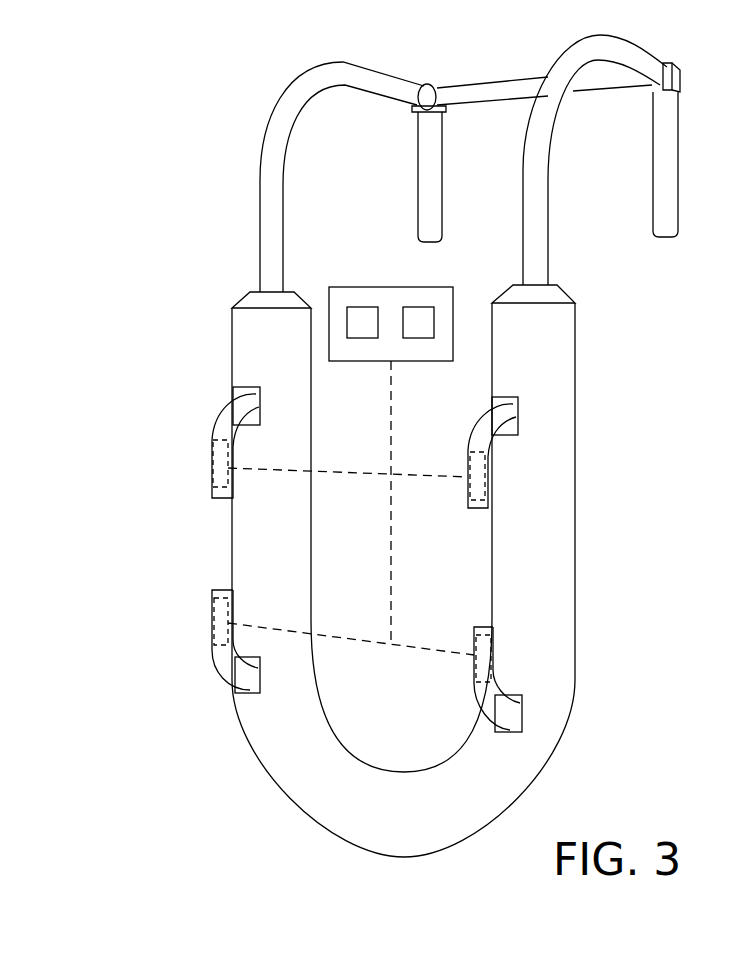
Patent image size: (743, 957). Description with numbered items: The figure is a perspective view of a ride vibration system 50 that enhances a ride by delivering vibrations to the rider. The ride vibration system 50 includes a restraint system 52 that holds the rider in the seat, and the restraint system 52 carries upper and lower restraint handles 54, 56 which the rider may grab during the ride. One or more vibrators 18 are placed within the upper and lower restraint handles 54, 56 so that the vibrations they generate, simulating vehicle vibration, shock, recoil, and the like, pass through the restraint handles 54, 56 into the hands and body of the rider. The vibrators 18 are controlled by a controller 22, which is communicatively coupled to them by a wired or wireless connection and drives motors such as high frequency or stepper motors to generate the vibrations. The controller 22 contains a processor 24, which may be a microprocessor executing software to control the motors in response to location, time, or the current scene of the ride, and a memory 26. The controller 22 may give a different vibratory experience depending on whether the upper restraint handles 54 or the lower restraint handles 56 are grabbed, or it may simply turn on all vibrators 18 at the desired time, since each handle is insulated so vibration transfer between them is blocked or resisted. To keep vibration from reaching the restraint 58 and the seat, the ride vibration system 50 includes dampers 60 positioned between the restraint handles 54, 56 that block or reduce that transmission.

The vibrator 18 is at (215, 486).
The controller 22 is at (388, 287).
The processor 24 is at (362, 306).
The memory 26 is at (418, 306).
The ride vibration system 50 is at (413, 446).
The restraint system 52 is at (192, 682).
The upper restraint handle 54 is at (201, 398).
The lower restraint handle 56 is at (579, 772).
The restraint 58 is at (548, 310).
The damper 60 is at (262, 405).